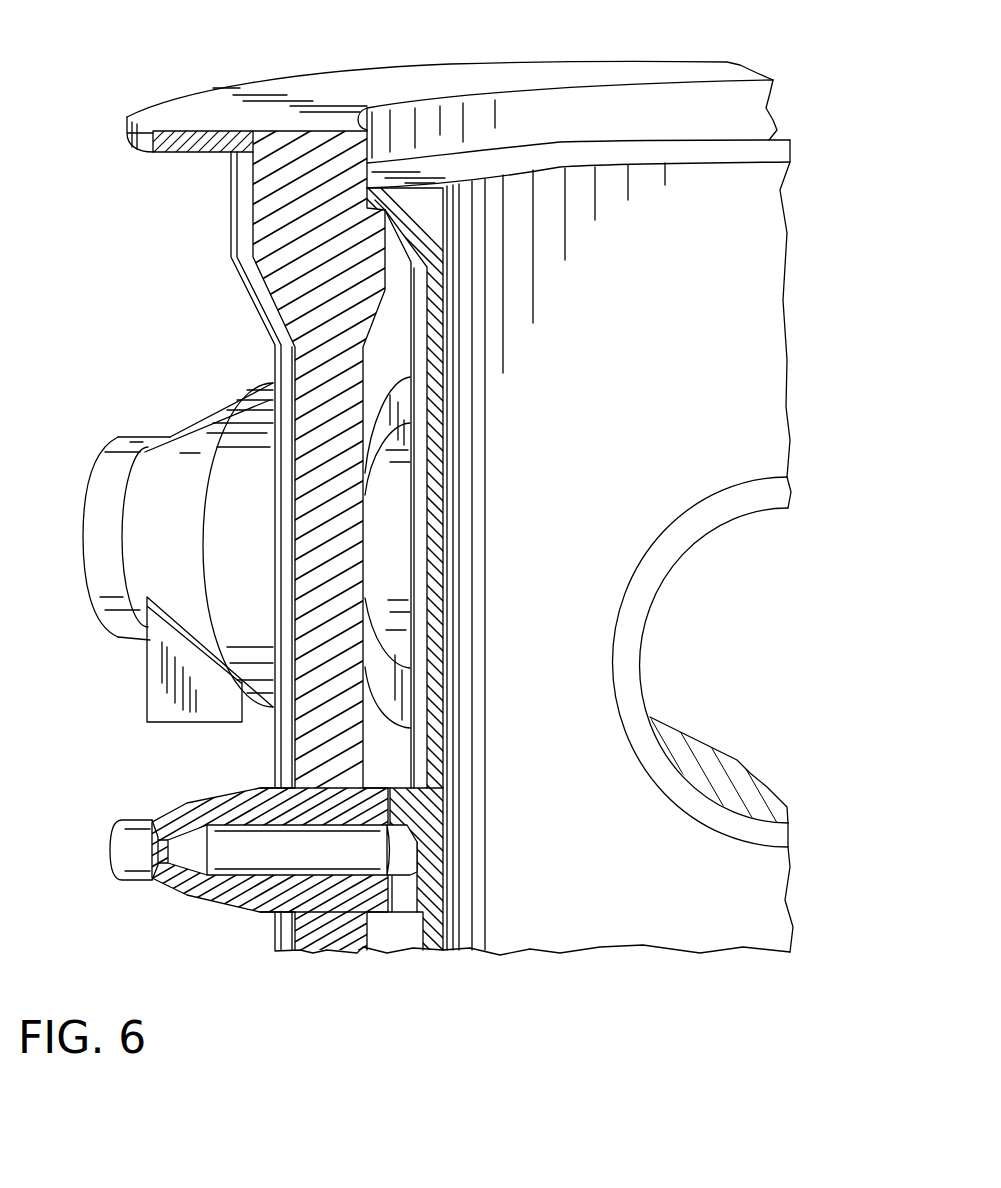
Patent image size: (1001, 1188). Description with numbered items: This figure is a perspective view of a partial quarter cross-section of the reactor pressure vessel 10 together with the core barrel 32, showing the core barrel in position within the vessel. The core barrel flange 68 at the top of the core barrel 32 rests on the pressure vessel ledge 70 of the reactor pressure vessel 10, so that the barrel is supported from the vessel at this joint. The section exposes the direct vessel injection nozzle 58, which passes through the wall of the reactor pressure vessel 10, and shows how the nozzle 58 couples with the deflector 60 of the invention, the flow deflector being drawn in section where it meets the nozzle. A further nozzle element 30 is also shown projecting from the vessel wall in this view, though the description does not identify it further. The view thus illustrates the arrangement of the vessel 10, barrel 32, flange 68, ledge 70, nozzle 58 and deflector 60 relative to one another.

The reactor pressure vessel 10 is at (293, 302).
The inlet nozzle 30 is at (113, 627).
The core barrel 32 is at (757, 383).
The direct vessel injection nozzle 58 is at (190, 897).
The deflector 60 is at (438, 882).
The core barrel flange 68 is at (500, 163).
The pressure vessel ledge 70 is at (376, 204).